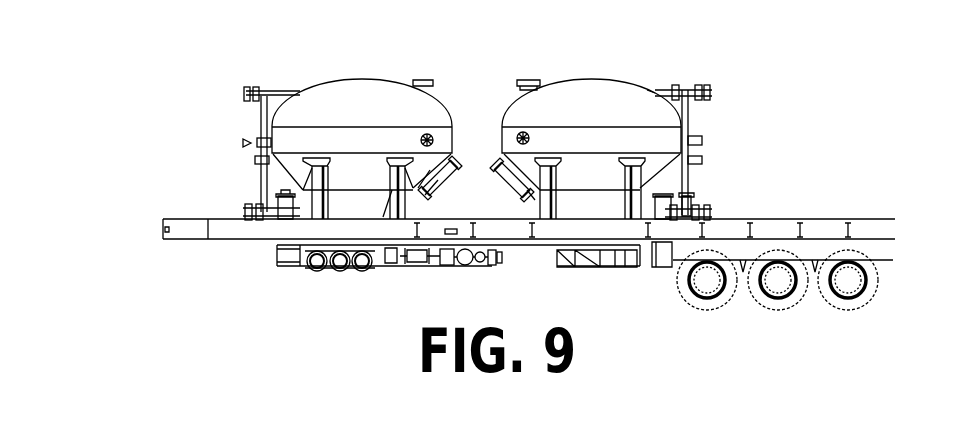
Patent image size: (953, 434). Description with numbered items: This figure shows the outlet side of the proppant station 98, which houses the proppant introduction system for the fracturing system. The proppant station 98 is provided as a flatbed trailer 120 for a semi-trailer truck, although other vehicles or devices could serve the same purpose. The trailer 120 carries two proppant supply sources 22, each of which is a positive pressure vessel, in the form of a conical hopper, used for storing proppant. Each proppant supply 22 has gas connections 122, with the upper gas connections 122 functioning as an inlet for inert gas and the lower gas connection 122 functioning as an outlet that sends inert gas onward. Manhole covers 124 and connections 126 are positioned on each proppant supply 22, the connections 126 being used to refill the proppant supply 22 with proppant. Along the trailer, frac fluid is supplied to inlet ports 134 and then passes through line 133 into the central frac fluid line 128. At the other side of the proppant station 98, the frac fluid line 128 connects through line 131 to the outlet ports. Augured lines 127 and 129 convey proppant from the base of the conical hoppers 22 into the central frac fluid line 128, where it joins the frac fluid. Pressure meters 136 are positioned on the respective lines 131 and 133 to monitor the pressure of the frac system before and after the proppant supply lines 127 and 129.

The proppant station 98 is at (272, 50).
The proppant supply source 22 is at (352, 182).
The gas connection 122 is at (247, 93).
The manhole cover 124 is at (440, 182).
The connection 126 is at (533, 82).
The line 131 is at (625, 0).
The inlet port 134 is at (317, 270).
The augured line 129 is at (363, 270).
The line 133 is at (397, 264).
The pressure meter 136 is at (423, 263).
The central frac fluid line 128 is at (480, 260).
The augured line 127 is at (557, 253).
The flatbed trailer 120 is at (887, 257).